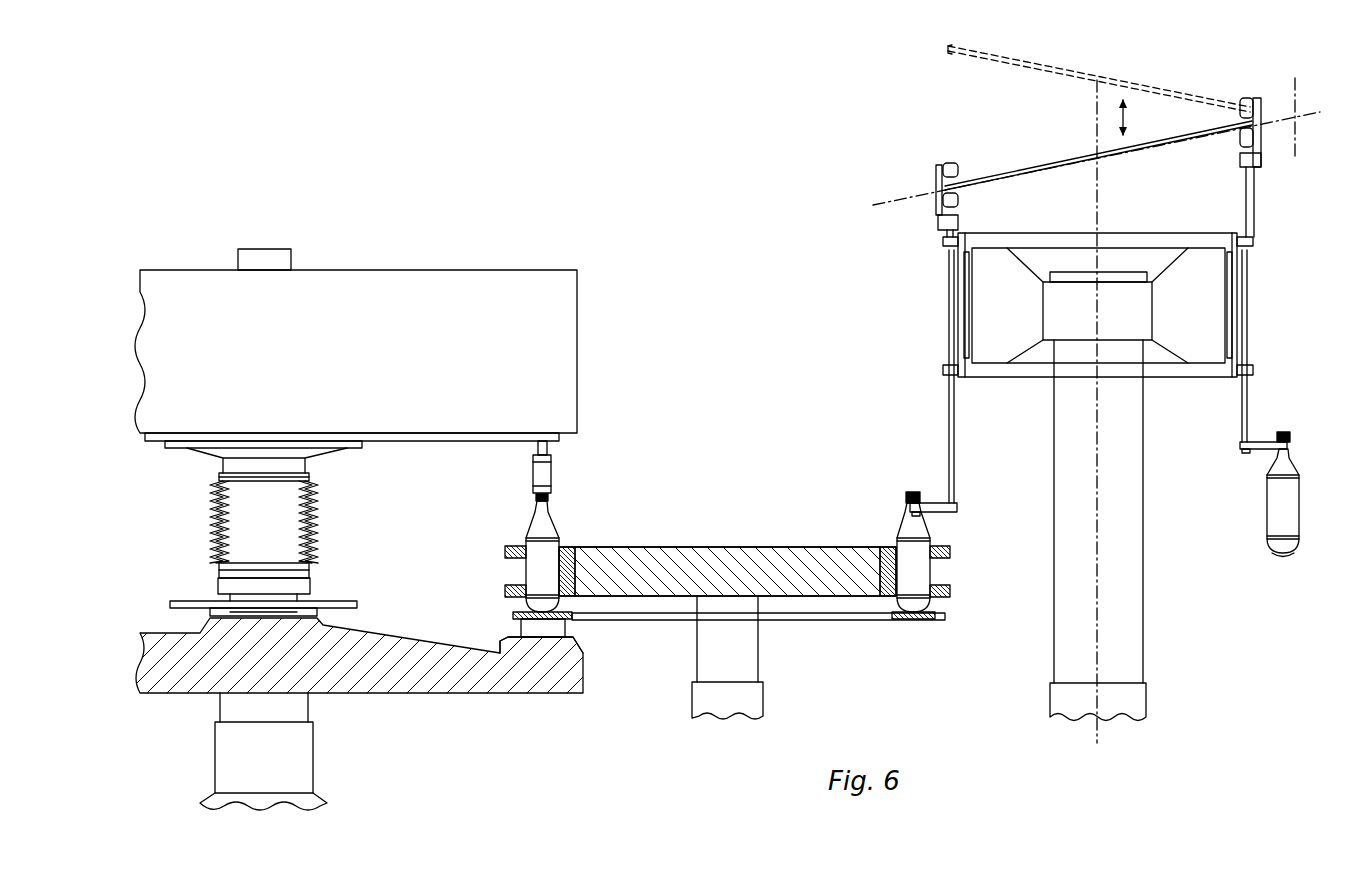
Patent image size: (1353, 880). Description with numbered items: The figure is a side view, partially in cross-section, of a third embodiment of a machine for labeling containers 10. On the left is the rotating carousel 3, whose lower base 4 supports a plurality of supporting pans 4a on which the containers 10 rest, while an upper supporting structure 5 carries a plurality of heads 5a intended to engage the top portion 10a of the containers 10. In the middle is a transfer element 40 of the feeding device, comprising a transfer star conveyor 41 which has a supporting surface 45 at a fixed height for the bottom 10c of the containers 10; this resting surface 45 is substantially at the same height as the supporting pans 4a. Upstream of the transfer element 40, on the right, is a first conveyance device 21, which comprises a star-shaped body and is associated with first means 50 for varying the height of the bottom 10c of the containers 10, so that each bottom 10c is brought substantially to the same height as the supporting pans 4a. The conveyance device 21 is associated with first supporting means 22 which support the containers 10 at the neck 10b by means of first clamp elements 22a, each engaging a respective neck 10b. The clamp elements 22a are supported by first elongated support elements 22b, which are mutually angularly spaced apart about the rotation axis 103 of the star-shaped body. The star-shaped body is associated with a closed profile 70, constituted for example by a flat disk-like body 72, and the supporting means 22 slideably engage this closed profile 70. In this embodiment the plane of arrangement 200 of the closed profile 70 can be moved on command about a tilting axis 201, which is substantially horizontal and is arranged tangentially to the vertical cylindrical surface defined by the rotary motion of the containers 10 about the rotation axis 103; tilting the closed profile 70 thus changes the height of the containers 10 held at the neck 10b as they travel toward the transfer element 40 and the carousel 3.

The rotating carousel 3 is at (349, 714).
The lower base 4 is at (430, 663).
The supporting pans 4a is at (548, 623).
The upper supporting structure 5 is at (489, 262).
The heads 5a is at (540, 480).
The containers 10 is at (522, 570).
The top portion 10a is at (540, 497).
The neck 10b is at (912, 506).
The bottom 10c is at (525, 630).
The transfer element 40 is at (725, 533).
The transfer star conveyor 41 is at (676, 570).
The supporting surface 45 is at (846, 620).
The first supporting means 22 is at (960, 430).
The first clamp elements 22a is at (935, 513).
The first elongated support element 22b is at (950, 343).
The first conveyance device 21 is at (1232, 85).
The first means for varying the height 50 is at (1085, 143).
The closed profile 70 is at (1020, 156).
The flat disk-like body 72 is at (985, 55).
The rotation axis 103 is at (1097, 700).
The plane of arrangement 200 is at (883, 197).
The tilting axis 201 is at (1296, 118).